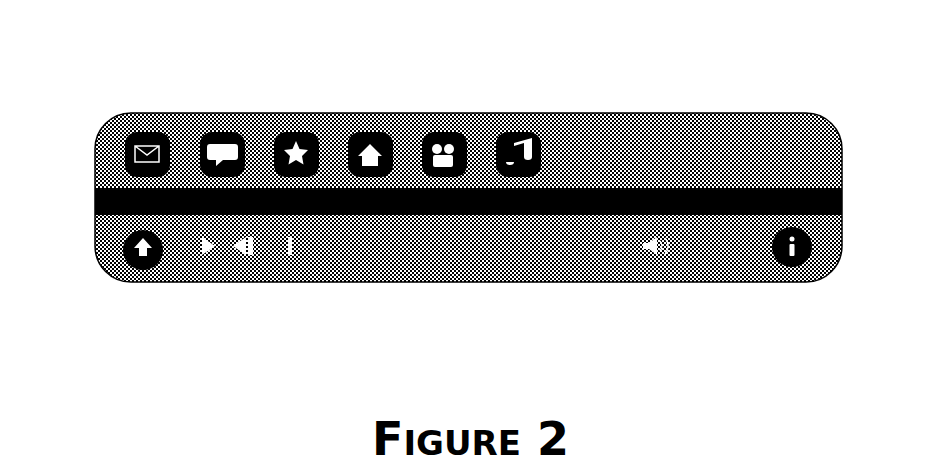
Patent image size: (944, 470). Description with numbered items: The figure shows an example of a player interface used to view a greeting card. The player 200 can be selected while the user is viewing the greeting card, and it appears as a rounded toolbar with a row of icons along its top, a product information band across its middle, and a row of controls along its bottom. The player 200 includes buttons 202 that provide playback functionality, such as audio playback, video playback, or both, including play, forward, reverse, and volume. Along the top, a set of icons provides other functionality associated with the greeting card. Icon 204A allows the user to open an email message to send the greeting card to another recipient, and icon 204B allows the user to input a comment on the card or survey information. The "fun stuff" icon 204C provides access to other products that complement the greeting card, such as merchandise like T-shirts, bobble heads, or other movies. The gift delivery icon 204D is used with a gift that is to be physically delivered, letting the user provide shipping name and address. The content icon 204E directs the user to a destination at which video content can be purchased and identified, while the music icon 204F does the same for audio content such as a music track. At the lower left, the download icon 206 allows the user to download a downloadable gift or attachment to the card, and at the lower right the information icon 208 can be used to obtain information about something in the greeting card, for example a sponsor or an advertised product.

The player 200 is at (653, 52).
The buttons 202 is at (748, 253).
The icon 204A is at (143, 128).
The icon 204B is at (221, 128).
The "fun stuff" icon 204C is at (296, 128).
The gift delivery icon 204D is at (370, 127).
The content icon 204E is at (444, 128).
The music icon 204F is at (518, 127).
The download icon 206 is at (127, 258).
The information icon 208 is at (800, 270).